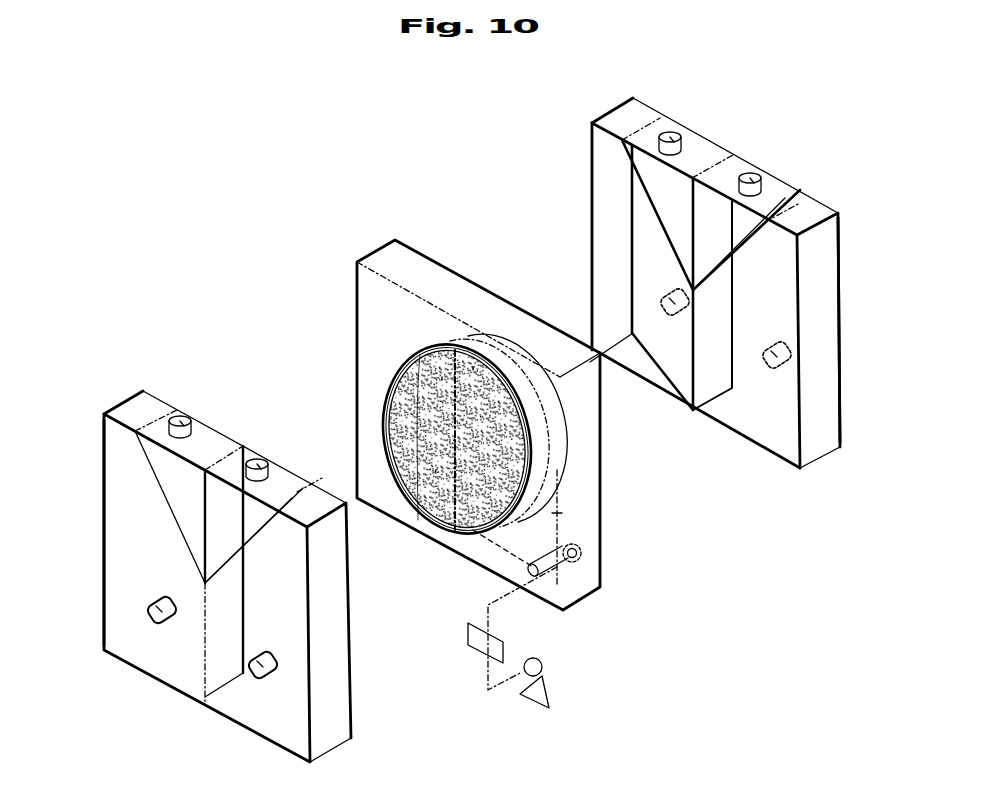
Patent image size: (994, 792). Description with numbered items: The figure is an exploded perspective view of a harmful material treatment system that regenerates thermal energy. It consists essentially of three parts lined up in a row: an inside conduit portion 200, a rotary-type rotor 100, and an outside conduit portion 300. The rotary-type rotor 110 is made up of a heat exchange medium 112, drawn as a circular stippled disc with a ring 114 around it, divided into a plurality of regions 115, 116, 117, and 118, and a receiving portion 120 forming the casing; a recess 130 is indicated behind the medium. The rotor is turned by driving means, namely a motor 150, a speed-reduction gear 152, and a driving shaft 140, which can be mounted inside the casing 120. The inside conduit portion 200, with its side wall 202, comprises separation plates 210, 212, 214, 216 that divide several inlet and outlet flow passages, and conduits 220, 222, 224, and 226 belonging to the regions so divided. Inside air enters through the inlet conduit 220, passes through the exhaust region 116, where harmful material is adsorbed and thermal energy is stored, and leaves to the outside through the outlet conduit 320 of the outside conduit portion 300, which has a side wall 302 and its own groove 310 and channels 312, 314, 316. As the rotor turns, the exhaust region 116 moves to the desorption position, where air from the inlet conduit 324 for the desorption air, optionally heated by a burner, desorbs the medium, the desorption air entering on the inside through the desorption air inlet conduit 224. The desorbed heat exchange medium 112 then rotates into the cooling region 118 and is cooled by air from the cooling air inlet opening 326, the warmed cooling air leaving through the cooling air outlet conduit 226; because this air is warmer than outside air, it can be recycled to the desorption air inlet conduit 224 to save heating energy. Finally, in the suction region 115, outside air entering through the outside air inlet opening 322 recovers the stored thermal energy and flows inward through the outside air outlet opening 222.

The rotary-type rotor 100 is at (372, 247).
The rotary-type rotor 110 is at (393, 360).
The heat exchange medium 112 is at (422, 353).
The filter ring 114 is at (385, 400).
The suction region 115 is at (493, 507).
The exhaust region 116 is at (435, 472).
The region of heat exchange medium 117 is at (442, 377).
The cooling region 118 is at (473, 367).
The receiving portion 120 is at (400, 258).
The cylindrical recess 130 is at (558, 513).
The driving shaft 140 is at (567, 567).
The motor 150 is at (545, 687).
The speed-reduction gear 152 is at (468, 633).
The inside conduit portion 200 is at (120, 393).
The side wall of first block 202 is at (103, 493).
The separation plate 210 is at (172, 520).
The separation plate 212 is at (205, 668).
The separation plate 214 is at (300, 490).
The separation plate 216 is at (230, 447).
The inlet conduit 220 is at (148, 615).
The outside air outlet opening 222 is at (253, 673).
The desorption air inlet conduit 224 is at (180, 420).
The cooling air outlet conduit 226 is at (257, 463).
The outside conduit portion 300 is at (606, 103).
The side wall of second block 302 is at (842, 310).
The V-shaped groove 310 is at (647, 203).
The vertical channel 312 is at (687, 385).
The diagonal channel 314 is at (787, 197).
The channel edge 316 is at (710, 157).
The outlet conduit 320 is at (667, 310).
The outside air inlet opening 322 is at (770, 363).
The inlet conduit for the desorption air 324 is at (670, 130).
The cooling air inlet opening 326 is at (750, 168).